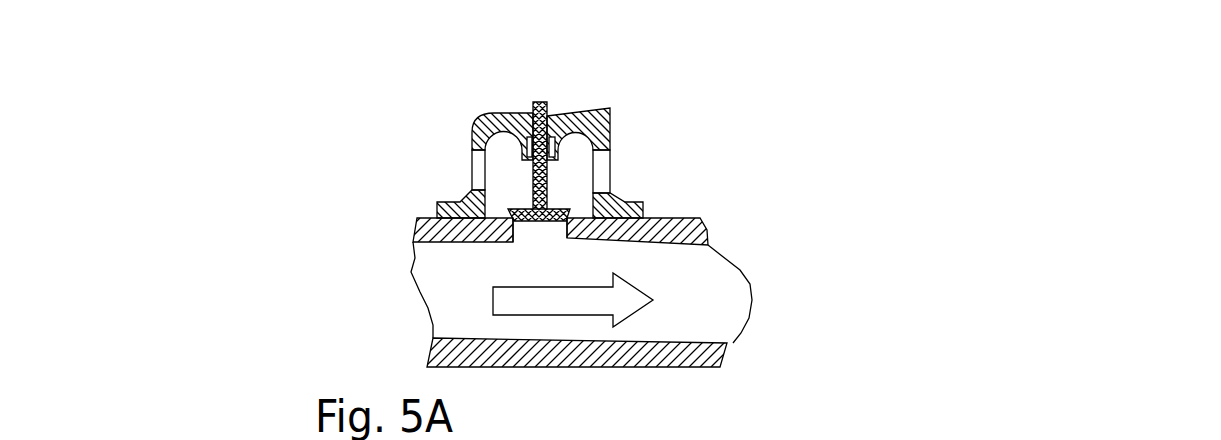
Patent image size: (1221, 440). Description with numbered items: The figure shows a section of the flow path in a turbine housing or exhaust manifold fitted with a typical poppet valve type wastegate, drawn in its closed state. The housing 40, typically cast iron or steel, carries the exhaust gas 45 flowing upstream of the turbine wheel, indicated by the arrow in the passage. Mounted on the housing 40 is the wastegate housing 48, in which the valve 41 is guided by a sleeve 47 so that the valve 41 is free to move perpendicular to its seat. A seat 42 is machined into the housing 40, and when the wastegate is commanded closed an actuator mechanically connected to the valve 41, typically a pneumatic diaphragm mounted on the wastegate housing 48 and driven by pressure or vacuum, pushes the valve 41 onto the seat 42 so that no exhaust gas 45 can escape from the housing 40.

The housing 40 is at (732, 345).
The valve 41 is at (533, 190).
The seat 42 is at (567, 218).
The exhaust gas 45 is at (573, 298).
The sleeve 47 is at (560, 152).
The wastegate housing 48 is at (470, 138).